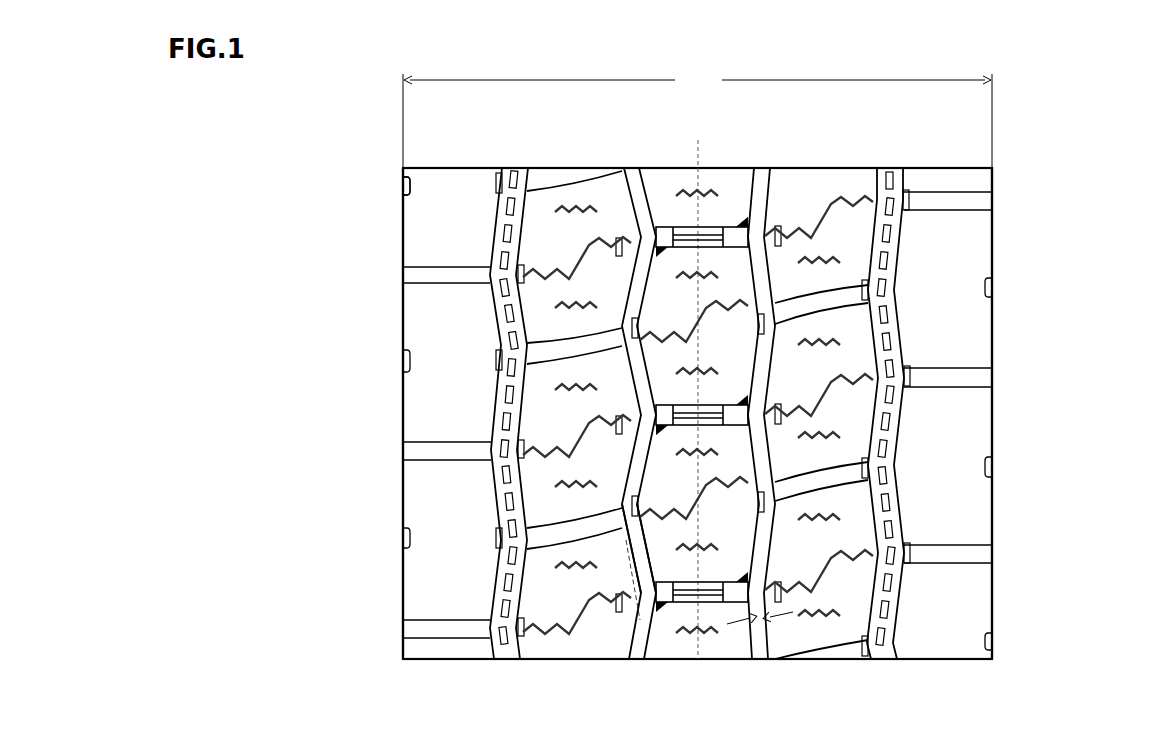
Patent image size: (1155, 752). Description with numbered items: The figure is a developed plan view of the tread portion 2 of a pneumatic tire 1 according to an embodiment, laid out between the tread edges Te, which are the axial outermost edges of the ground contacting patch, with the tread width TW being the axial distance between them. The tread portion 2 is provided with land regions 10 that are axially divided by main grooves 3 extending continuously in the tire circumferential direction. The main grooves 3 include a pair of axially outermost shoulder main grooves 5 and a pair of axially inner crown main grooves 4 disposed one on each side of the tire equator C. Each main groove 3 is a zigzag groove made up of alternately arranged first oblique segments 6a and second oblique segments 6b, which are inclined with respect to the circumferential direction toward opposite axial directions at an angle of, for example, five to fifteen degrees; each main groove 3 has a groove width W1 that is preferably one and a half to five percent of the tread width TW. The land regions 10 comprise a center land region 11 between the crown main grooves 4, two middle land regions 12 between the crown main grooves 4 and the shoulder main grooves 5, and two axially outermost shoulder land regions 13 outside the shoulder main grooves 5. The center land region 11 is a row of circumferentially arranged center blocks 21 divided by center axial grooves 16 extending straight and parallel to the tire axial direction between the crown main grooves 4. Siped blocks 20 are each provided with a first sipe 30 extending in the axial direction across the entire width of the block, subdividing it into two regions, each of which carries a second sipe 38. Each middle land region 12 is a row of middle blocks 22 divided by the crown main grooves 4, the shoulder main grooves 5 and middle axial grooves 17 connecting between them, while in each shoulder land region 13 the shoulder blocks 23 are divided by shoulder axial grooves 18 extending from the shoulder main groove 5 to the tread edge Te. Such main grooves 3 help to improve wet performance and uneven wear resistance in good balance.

The tire 1 is at (737, 165).
The tread portion 2 is at (850, 165).
The main grooves 3 is at (610, 705).
The crown main grooves 4 is at (627, 655).
The shoulder main grooves 5 is at (509, 643).
The first oblique segments 6a is at (503, 498).
The second oblique segments 6b is at (503, 582).
The land regions 10 is at (660, 126).
The center land region 11 is at (656, 202).
The middle land regions 12 is at (586, 193).
The shoulder land regions 13 is at (463, 192).
The center axial grooves 16 is at (740, 238).
The middle axial grooves 17 is at (550, 358).
The shoulder axial grooves 18 is at (443, 277).
The siped block 20 is at (718, 297).
The center blocks 21 is at (718, 512).
The middle blocks 22 is at (561, 238).
The shoulder blocks 23 is at (444, 402).
The first sipe 30 is at (564, 258).
The second sipe 38 is at (566, 313).
The tire equator C is at (698, 390).
The tread edges Te is at (402, 197).
The tread width TW is at (697, 118).
The groove width W1 is at (745, 635).